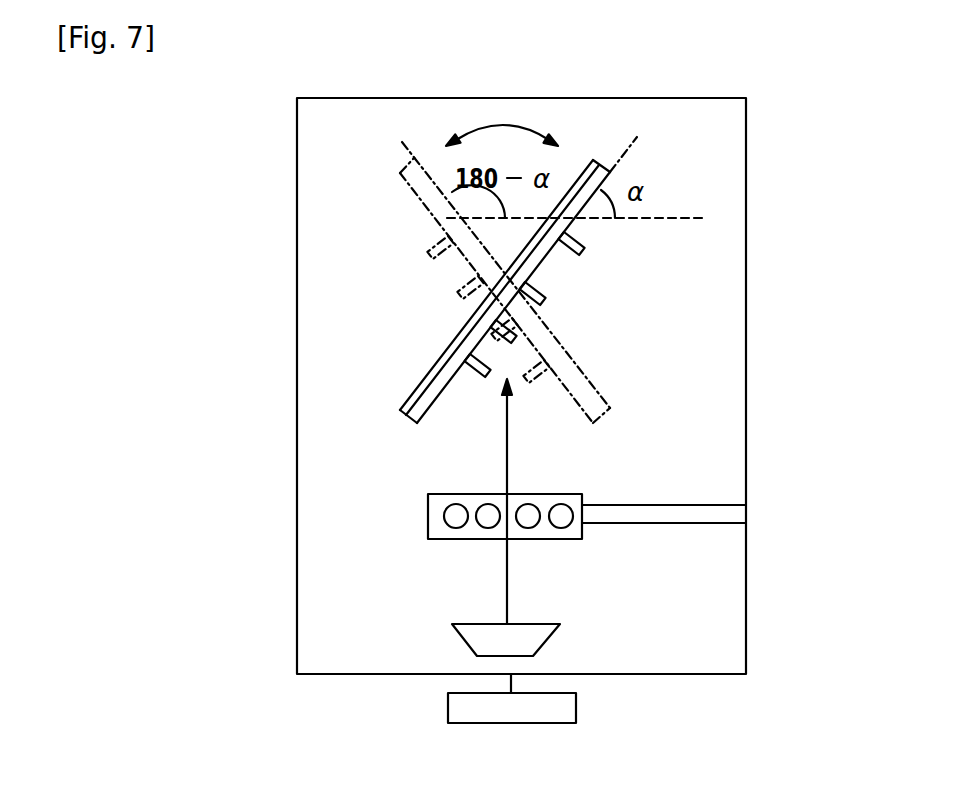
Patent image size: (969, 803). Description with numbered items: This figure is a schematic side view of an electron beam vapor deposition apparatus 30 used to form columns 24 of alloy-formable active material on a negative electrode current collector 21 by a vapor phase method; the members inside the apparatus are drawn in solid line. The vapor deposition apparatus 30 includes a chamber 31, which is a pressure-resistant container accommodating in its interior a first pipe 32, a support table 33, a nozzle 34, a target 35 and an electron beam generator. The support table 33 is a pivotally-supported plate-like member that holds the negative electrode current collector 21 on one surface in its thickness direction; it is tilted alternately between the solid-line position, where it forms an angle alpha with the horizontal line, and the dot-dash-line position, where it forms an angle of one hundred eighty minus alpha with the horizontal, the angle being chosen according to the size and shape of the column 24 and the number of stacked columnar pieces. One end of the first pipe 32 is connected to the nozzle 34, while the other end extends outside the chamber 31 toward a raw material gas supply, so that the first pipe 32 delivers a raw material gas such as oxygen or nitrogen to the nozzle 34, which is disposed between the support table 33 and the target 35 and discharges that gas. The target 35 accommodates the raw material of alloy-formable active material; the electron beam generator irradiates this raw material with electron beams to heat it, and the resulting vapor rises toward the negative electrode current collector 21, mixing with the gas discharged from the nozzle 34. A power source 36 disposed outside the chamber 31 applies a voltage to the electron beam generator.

The negative electrode current collector 21 is at (413, 422).
The column 24 is at (593, 240).
The electron beam vapor deposition apparatus 30 is at (258, 127).
The chamber 31 is at (747, 210).
The first pipe 32 is at (693, 517).
The support table 33 is at (593, 160).
The nozzle 34 is at (550, 537).
The target 35 is at (489, 635).
The power source 36 is at (462, 713).